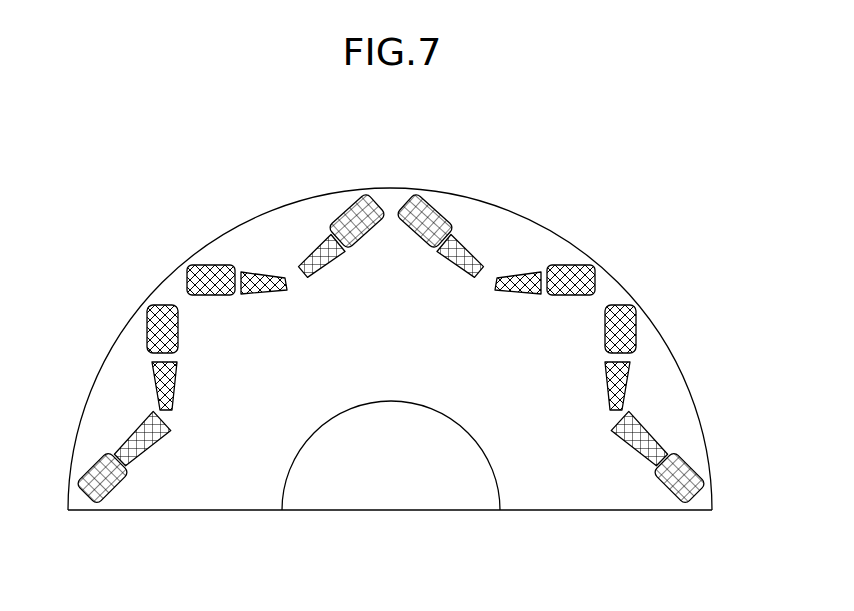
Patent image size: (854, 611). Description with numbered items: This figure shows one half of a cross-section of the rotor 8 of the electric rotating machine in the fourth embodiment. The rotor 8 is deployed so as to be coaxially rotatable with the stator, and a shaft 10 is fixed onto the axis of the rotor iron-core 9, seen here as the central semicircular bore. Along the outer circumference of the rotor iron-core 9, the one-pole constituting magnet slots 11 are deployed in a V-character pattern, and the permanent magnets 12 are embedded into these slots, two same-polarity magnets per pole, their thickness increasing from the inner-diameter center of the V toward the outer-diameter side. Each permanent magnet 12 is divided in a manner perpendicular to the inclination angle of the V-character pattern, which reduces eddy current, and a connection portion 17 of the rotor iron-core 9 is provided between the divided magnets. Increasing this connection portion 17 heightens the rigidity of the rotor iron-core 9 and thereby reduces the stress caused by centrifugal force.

The rotor 8 is at (391, 188).
The rotor iron-core 9 is at (553, 490).
The shaft 10 is at (392, 497).
The 1-pole constituting magnet slots 11 is at (565, 298).
The permanent magnets 12 is at (355, 242).
The connection portion 17 is at (182, 352).